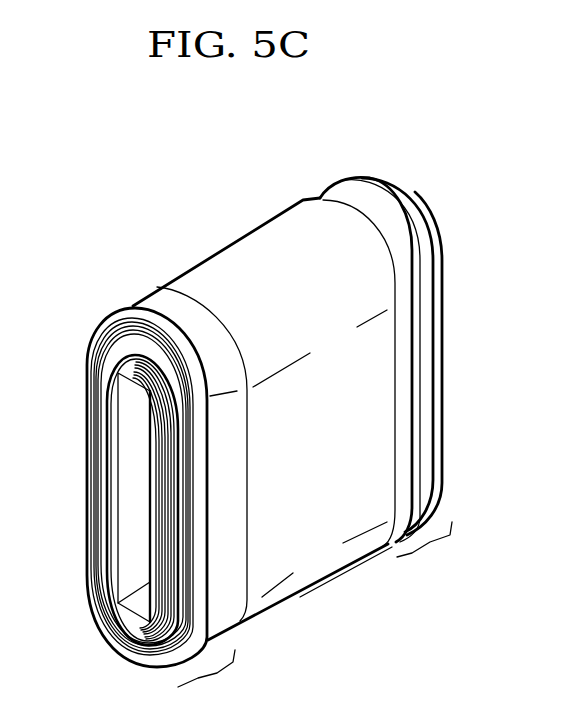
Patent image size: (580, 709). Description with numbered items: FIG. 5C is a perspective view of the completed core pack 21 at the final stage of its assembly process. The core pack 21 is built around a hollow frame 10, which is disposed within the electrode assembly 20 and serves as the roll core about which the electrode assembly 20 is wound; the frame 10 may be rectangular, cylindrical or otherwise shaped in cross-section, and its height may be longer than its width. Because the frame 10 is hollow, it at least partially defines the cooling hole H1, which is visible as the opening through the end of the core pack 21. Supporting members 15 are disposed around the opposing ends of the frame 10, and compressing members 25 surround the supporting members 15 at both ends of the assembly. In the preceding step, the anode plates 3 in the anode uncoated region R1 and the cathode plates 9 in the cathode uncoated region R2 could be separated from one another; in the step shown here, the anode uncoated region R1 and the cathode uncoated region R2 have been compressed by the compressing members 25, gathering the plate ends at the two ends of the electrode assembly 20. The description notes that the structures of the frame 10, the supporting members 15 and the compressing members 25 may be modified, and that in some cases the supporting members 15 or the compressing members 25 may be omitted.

The core pack 21 is at (204, 212).
The electrode assembly 20 is at (263, 236).
The compressing members 25 is at (343, 180).
The cathode plates 9 is at (418, 205).
The anode plates 3 is at (85, 425).
The supporting members 15 is at (88, 355).
The frame 10 is at (118, 558).
The cooling hole H1 is at (134, 500).
The anode uncoated region R1 is at (208, 674).
The cathode uncoated region R2 is at (425, 548).